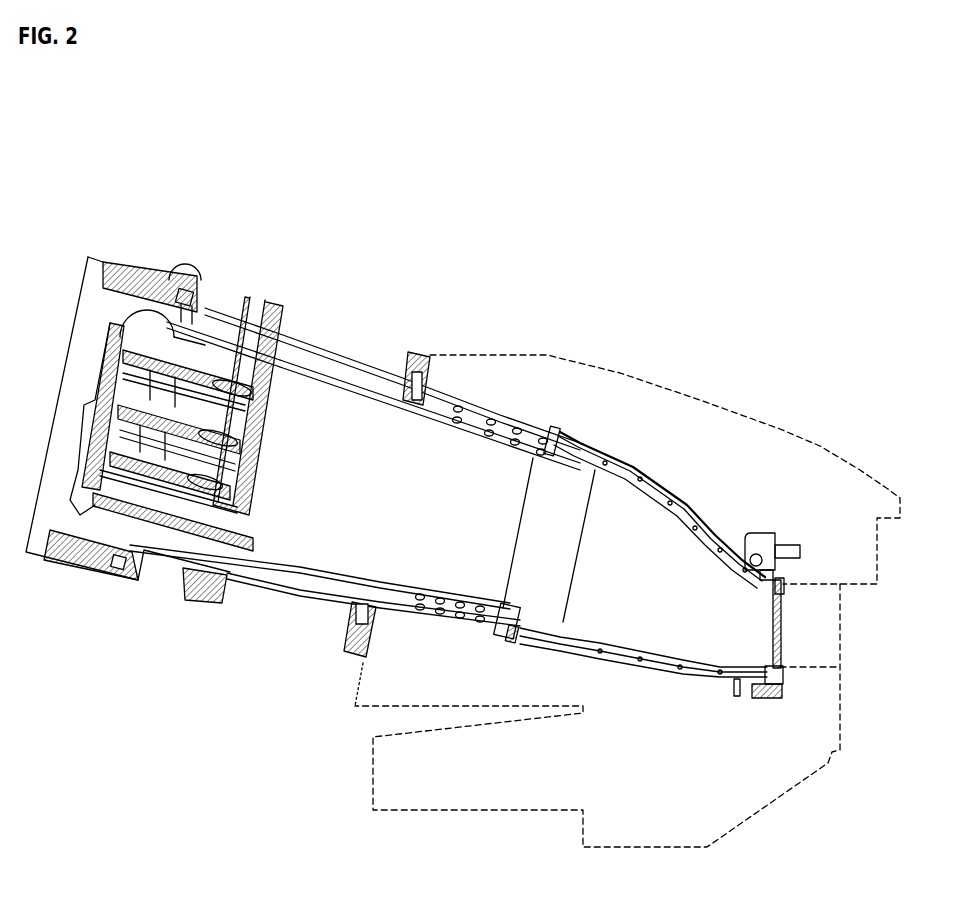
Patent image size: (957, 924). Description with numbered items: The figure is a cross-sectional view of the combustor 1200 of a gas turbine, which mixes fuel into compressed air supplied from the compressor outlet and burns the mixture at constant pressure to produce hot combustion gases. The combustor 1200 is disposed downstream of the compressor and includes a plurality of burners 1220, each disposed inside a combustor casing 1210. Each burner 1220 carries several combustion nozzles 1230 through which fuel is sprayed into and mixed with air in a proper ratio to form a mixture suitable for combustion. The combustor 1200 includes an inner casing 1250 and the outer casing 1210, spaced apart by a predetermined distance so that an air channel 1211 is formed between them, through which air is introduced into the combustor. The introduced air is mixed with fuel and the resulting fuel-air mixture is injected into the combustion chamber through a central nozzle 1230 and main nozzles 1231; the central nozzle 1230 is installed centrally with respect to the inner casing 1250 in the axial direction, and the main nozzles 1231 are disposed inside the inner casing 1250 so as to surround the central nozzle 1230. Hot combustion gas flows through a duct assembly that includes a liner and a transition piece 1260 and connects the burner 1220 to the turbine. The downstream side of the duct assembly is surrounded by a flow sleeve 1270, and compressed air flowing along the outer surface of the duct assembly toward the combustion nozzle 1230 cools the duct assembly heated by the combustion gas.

The combustor 1200 is at (190, 196).
The combustor casing 1210 is at (306, 333).
The air channel 1211 is at (258, 573).
The burner 1220 is at (84, 397).
The combustion nozzle 1230 is at (110, 530).
The main nozzle 1231 is at (198, 518).
The inner casing 1250 is at (364, 380).
The transition piece 1260 is at (566, 437).
The flow sleeve 1270 is at (607, 443).